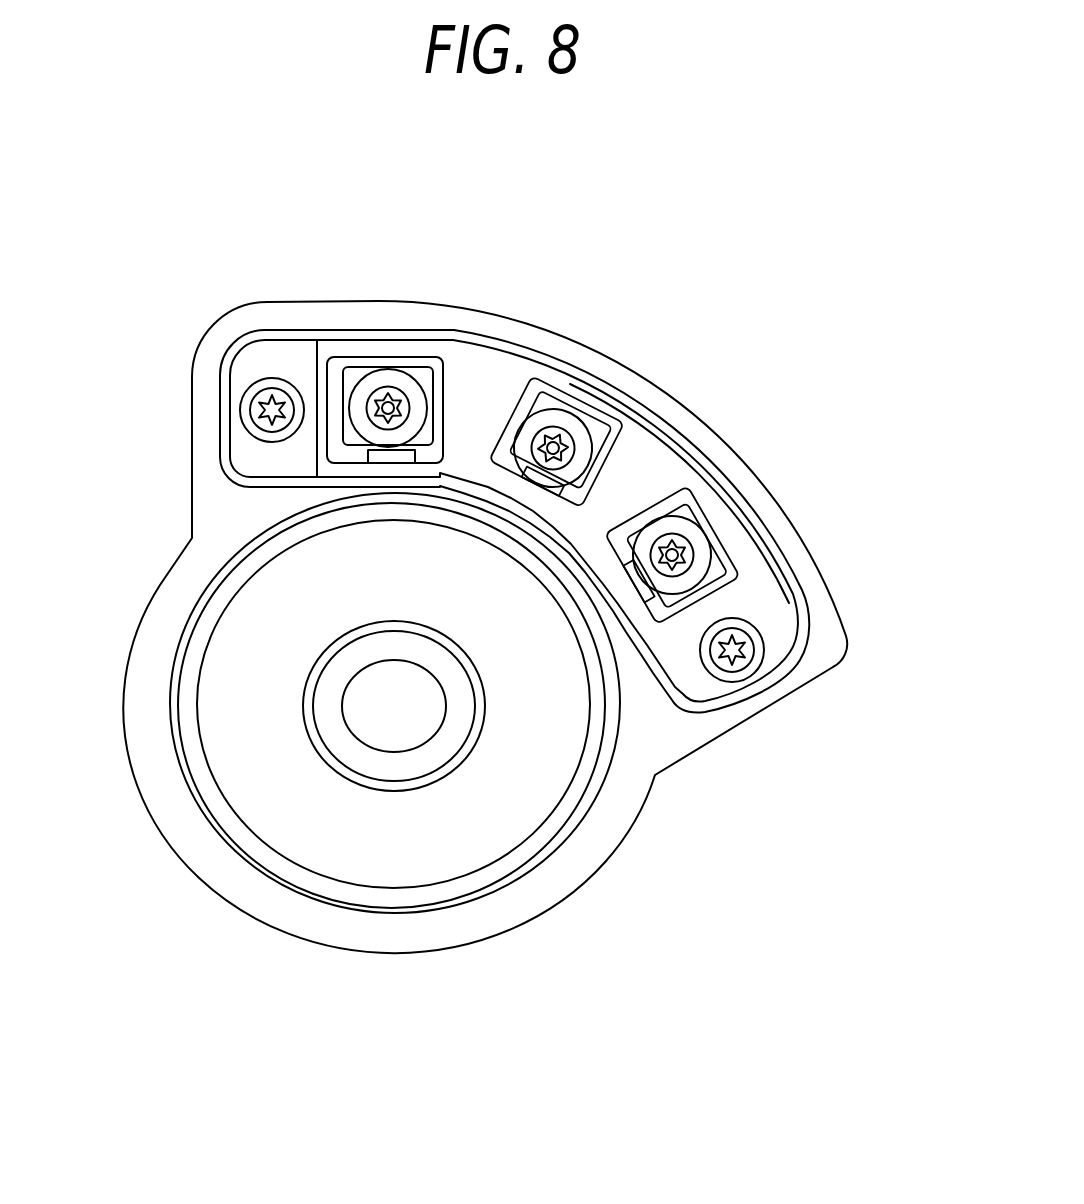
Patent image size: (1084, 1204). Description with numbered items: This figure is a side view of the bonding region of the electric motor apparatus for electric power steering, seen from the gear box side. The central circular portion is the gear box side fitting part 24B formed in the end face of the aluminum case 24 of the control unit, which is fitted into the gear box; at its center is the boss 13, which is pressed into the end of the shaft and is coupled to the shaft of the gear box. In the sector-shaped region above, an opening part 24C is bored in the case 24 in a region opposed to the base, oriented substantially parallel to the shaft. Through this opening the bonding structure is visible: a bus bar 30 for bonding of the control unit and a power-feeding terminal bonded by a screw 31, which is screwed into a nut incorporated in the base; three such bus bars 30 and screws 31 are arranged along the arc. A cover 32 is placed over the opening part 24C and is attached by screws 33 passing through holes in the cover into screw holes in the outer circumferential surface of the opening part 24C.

The boss 13 is at (328, 732).
The case 24 is at (425, 937).
The gear box side fitting part 24B is at (568, 843).
The opening part 24C is at (478, 397).
The bus bar 30 is at (348, 352).
The screw 31 is at (392, 382).
The cover 32 is at (780, 624).
The screw 33 is at (242, 404).